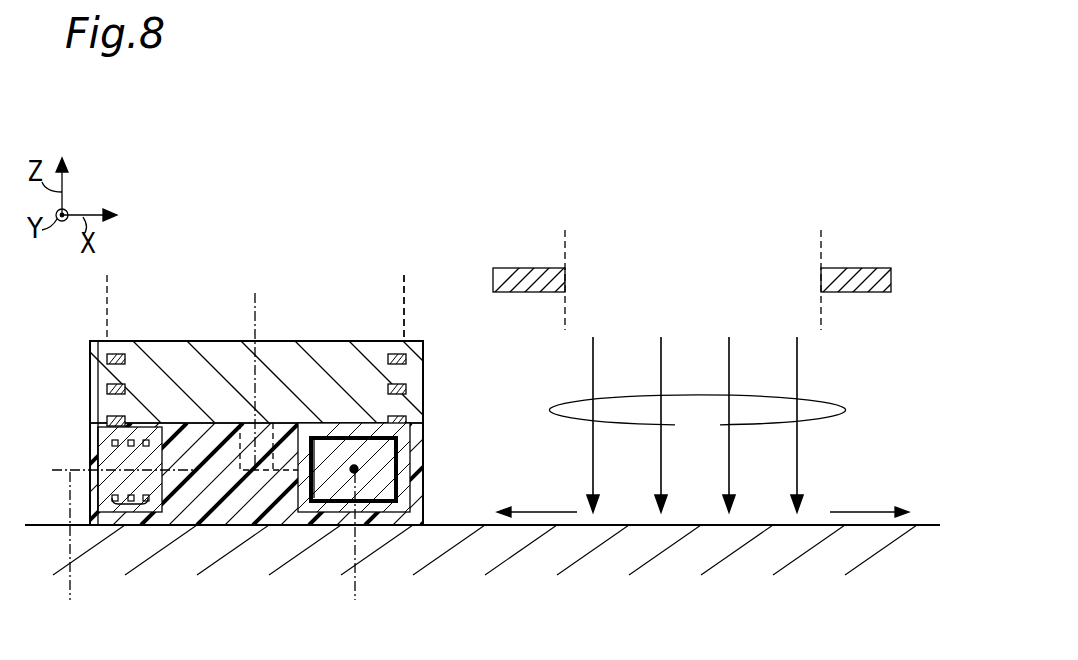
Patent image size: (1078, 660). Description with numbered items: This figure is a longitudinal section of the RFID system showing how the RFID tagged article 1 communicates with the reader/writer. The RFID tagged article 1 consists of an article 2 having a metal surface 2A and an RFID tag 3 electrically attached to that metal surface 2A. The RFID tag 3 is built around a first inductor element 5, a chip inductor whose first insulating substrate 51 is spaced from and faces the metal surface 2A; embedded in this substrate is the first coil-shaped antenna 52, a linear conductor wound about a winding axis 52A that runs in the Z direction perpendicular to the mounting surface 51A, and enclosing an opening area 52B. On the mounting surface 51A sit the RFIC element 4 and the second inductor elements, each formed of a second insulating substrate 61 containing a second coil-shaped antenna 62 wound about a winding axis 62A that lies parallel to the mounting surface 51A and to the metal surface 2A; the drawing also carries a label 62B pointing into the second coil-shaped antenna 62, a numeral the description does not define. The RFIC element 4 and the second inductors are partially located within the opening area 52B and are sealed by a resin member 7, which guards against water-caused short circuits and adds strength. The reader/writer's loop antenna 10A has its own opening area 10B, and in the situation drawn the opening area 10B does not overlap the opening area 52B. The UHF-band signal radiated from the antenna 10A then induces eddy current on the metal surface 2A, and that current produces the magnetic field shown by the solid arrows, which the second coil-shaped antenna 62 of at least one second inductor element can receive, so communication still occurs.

The RFID tagged article 1 is at (203, 156).
The article 2 is at (863, 545).
The metal surface 2A is at (930, 523).
The RFID tag 3 is at (445, 338).
The RFIC element 4 is at (273, 423).
The first inductor element 5 is at (352, 358).
The resin member 7 is at (218, 514).
The antenna 10A is at (862, 286).
The opening area 10B is at (820, 262).
The first insulating substrate 51 is at (158, 358).
The mounting surface 51A is at (425, 434).
The first coil-shaped antenna 52 is at (105, 390).
The winding axis 52A is at (250, 312).
The opening area 52B is at (407, 293).
The second insulating substrate 61 is at (425, 499).
The second coil-shaped antenna 62 is at (130, 505).
The winding axis 62A is at (209, 550).
The chip surface 62B is at (388, 473).